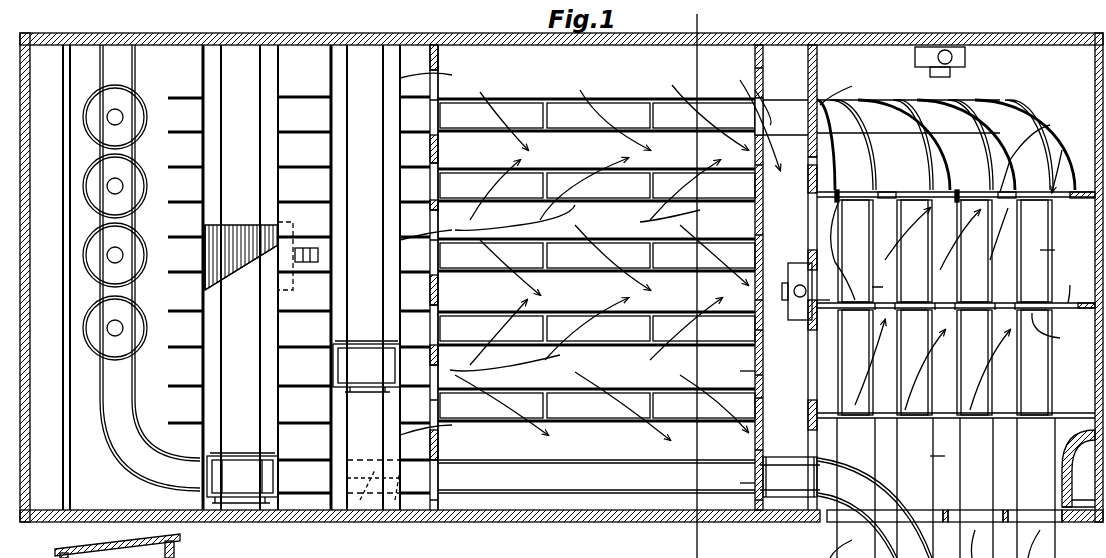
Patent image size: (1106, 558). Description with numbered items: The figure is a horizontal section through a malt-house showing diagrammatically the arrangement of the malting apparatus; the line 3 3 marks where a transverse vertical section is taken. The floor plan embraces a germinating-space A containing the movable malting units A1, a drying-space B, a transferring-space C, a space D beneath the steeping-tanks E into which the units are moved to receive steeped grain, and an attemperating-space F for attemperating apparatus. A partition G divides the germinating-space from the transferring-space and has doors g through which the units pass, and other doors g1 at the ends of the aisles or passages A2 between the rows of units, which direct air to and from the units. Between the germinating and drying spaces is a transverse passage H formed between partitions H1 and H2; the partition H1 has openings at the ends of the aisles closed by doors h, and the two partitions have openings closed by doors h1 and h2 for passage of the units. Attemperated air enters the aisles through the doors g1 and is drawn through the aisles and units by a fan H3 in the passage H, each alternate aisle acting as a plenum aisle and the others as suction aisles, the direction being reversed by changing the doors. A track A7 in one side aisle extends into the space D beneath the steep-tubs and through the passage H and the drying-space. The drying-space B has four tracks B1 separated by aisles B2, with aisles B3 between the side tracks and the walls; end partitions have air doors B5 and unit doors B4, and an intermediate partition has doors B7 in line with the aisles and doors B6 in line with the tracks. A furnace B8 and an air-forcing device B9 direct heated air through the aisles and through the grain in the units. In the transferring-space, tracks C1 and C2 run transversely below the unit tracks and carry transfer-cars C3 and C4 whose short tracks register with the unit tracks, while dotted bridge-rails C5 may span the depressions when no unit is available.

The germinating-space A is at (600, 277).
The malting units A1 is at (596, 260).
The aisles or passages A2 is at (599, 252).
The track A7 is at (596, 476).
The drying-space B is at (956, 138).
The tracks B1 is at (936, 488).
The aisles B2 is at (937, 332).
The aisles B3 is at (956, 254).
The doors B4 is at (938, 277).
The doors B5 is at (947, 278).
The doors B6 is at (966, 323).
The doors B7 is at (956, 340).
The furnace B8 is at (1080, 468).
The air-forcing device B9 is at (965, 75).
The transferring-space C is at (298, 60).
The track C1 is at (222, 185).
The track C2 is at (388, 145).
The transfer-car C3 is at (238, 456).
The transfer-car C4 is at (365, 342).
The bridge-rails C5 is at (366, 460).
The space beneath the steeping-tanks D is at (150, 268).
The steeping-tanks E is at (138, 128).
The attemperating-space F is at (50, 277).
The partition G is at (450, 45).
The doors g is at (430, 115).
The doors g1 is at (440, 440).
The transverse passage H is at (796, 277).
The partition H1 is at (745, 50).
The partition H2 is at (828, 60).
The fan H3 is at (792, 263).
The doors h is at (752, 224).
The doors h1 is at (760, 296).
The doors h2 is at (819, 285).
The section line 3- 3 is at (703, 281).